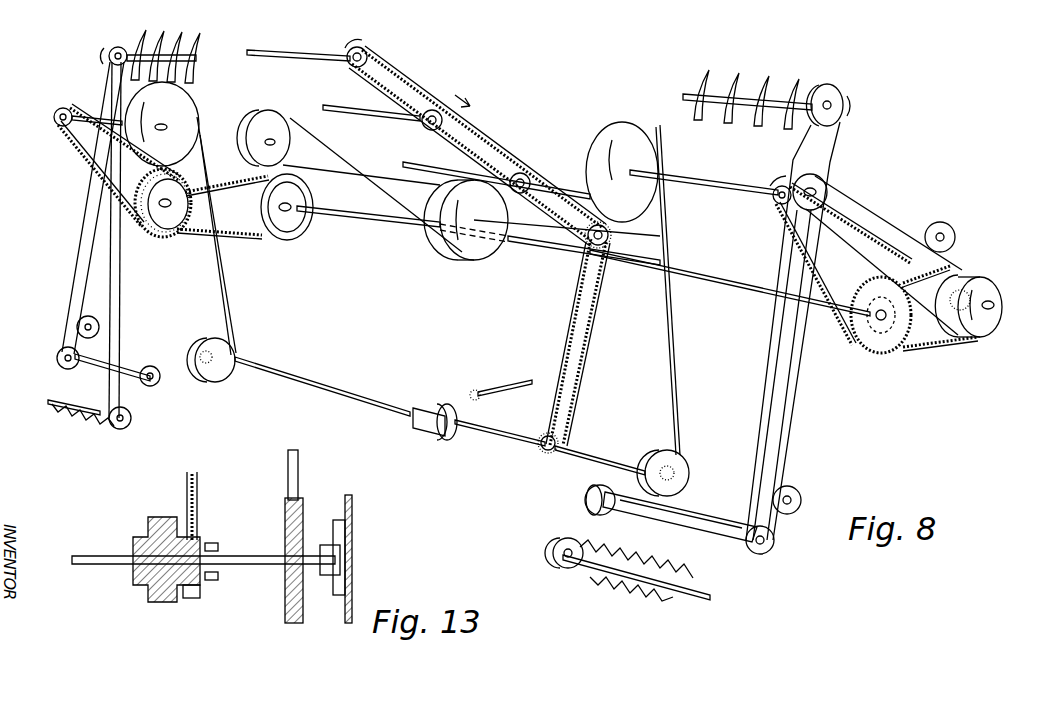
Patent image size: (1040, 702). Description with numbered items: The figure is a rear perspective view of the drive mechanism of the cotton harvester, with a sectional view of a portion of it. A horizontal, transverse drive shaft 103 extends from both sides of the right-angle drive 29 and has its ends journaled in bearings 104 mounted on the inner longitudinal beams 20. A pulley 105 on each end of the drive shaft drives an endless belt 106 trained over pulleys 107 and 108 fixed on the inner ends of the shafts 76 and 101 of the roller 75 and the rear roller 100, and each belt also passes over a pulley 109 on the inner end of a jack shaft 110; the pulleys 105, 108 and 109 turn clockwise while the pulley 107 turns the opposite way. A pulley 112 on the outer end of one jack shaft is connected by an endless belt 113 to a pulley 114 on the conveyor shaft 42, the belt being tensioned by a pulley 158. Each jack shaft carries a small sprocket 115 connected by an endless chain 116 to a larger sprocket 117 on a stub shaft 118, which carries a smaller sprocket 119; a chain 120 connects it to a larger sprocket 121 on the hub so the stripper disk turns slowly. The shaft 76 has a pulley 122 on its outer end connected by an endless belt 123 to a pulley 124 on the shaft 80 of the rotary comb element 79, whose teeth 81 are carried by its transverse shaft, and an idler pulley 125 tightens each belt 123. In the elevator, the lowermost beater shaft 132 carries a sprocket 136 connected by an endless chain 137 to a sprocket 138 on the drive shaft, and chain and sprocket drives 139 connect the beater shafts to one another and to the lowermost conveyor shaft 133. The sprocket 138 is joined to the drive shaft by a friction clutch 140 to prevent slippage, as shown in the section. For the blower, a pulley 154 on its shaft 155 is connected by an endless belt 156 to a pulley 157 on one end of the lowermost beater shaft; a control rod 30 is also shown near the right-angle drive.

In FIG. 13, the longitudinal beam 20 is at (352, 512).
In FIG. 8, the right-angle drive 29 is at (412, 422).
In FIG. 8, the control rod 30 is at (500, 379).
In FIG. 8, the conveyor shaft 42 is at (736, 280).
In FIG. 8, the roller 75 is at (676, 537).
In FIG. 8, the axial shaft 76 is at (129, 356).
In FIG. 8, the rotary comb element 79 is at (196, 54).
In FIG. 8, the teeth 80 is at (197, 59).
In FIG. 8, the transverse shaft 81 is at (796, 78).
In FIG. 8, the roller 100 is at (87, 422).
In FIG. 8, the transverse shaft 101 is at (50, 404).
In FIG. 8, the drive shaft 103 is at (491, 448).
In FIG. 13, the drive shaft 103 is at (110, 553).
In FIG. 8, the bearing 104 is at (203, 351).
In FIG. 13, the bearing 104 is at (326, 581).
In FIG. 8, the pulley 105 is at (229, 380).
In FIG. 13, the pulley 105 is at (285, 528).
In FIG. 8, the endless belt 106 is at (228, 288).
In FIG. 13, the endless belt 106 is at (299, 471).
In FIG. 8, the pulley 107 is at (153, 365).
In FIG. 8, the pulley 108 is at (132, 417).
In FIG. 8, the pulley 109 is at (184, 99).
In FIG. 8, the jack shaft 110 is at (166, 124).
In FIG. 8, the pulley 112 is at (826, 194).
In FIG. 8, the endless belt 113 is at (868, 216).
In FIG. 8, the pulley 114 is at (991, 278).
In FIG. 8, the small sprocket 115 is at (58, 122).
In FIG. 8, the endless chain 116 is at (80, 152).
In FIG. 8, the larger sprocket 117 is at (181, 190).
In FIG. 8, the stub shaft 118 is at (529, 279).
In FIG. 8, the smaller sprocket 119 is at (156, 232).
In FIG. 8, the chain 120 is at (236, 236).
In FIG. 8, the larger sprocket 121 is at (297, 238).
In FIG. 8, the pulley 122 is at (60, 366).
In FIG. 8, the endless belt 123 is at (86, 200).
In FIG. 8, the pulley 124 is at (108, 57).
In FIG. 8, the idler pulley 125 is at (90, 316).
In FIG. 8, the beater shaft 132 is at (367, 108).
In FIG. 8, the conveyor shaft 133 is at (304, 44).
In FIG. 8, the sprocket 136 is at (612, 237).
In FIG. 8, the endless chain 137 is at (597, 332).
In FIG. 13, the endless chain 137 is at (200, 479).
In FIG. 8, the sprocket 138 is at (546, 453).
In FIG. 13, the sprocket 138 is at (190, 598).
In FIG. 8, the chain and sprocket drives 139 is at (386, 66).
In FIG. 13, the friction clutch 140 is at (143, 528).
In FIG. 8, the pulley 154 is at (279, 126).
In FIG. 8, the blower shaft 155 is at (283, 150).
In FIG. 8, the endless belt 156 is at (381, 199).
In FIG. 8, the pulley 157 is at (490, 207).
In FIG. 8, the pulley 158 is at (938, 220).